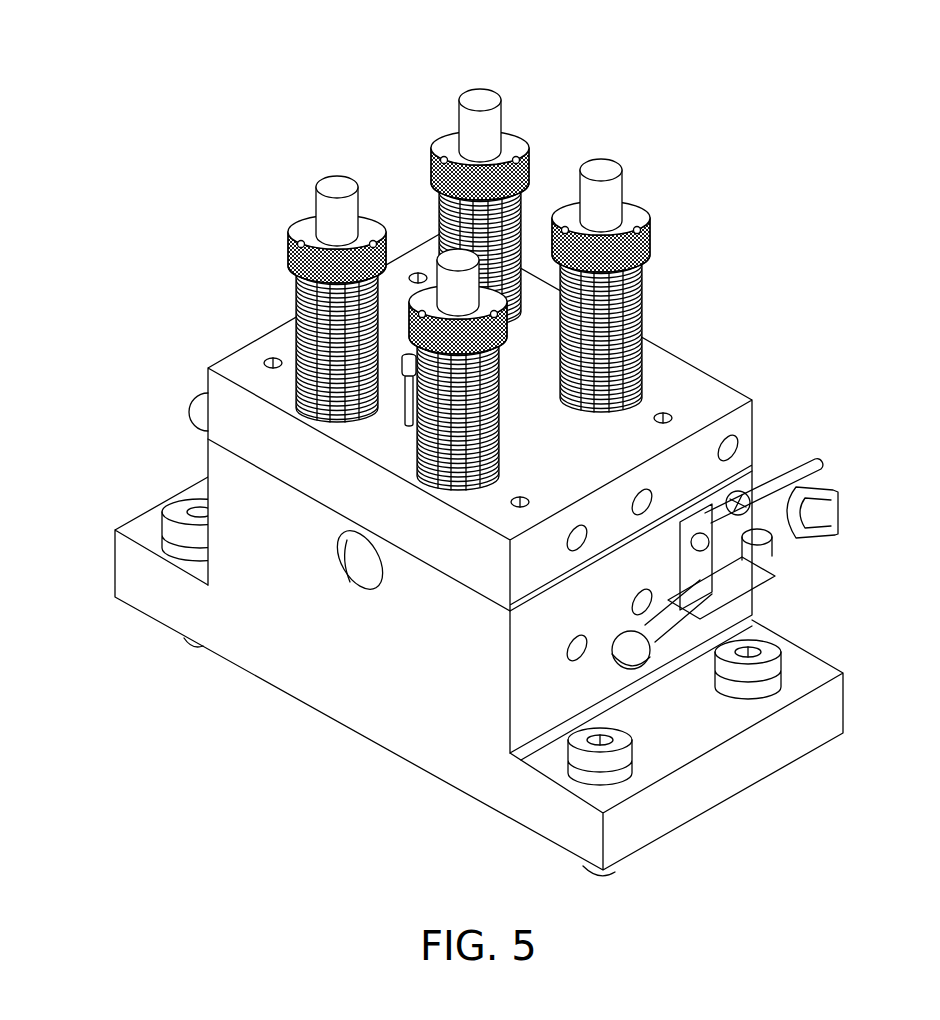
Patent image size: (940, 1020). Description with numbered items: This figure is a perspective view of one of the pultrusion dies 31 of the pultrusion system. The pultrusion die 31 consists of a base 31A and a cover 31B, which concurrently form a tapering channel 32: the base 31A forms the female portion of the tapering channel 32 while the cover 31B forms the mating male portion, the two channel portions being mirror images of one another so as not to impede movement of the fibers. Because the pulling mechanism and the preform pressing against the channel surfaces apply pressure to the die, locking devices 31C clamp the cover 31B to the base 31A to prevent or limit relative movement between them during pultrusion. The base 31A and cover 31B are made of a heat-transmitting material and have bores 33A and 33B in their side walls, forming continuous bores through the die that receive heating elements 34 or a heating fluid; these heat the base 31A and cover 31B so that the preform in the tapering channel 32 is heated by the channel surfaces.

The pultrusion die 31 is at (501, 459).
The base 31A is at (287, 662).
The cover 31B is at (728, 393).
The locking devices 31C is at (443, 122).
The tapering channel 32 is at (363, 558).
The bores 33A is at (643, 602).
The bores 33B is at (737, 433).
The heating elements 34 is at (183, 412).